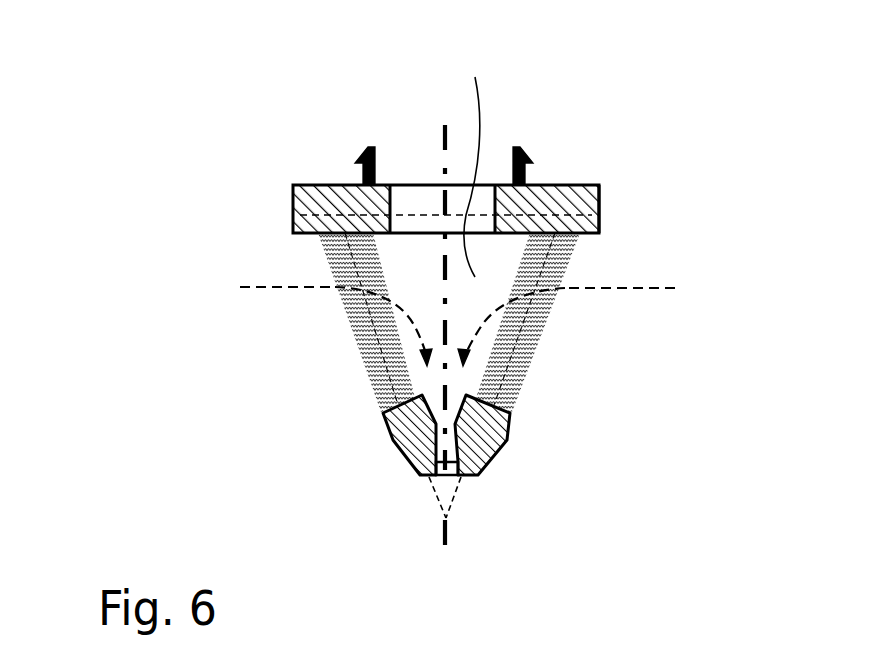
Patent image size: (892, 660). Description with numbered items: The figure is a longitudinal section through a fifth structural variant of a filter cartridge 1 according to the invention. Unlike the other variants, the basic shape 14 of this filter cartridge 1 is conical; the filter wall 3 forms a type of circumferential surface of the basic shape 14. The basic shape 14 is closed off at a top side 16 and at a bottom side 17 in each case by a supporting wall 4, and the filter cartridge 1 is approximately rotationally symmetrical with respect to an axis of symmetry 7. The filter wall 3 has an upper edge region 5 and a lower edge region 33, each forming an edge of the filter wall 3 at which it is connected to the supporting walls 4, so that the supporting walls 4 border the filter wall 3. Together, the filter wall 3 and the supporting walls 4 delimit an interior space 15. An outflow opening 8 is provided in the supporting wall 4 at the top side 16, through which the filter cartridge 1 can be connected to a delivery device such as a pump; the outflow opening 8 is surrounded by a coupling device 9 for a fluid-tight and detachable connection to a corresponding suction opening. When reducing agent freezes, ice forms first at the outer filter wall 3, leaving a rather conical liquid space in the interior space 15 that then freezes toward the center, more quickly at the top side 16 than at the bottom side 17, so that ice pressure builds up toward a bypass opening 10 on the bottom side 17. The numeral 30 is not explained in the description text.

The filter cartridge 1 is at (273, 165).
The filter wall 3 is at (573, 249).
The supporting wall 4 is at (555, 185).
The upper edge region 5 is at (318, 237).
The axis of symmetry 7 is at (445, 126).
The outflow opening 8 is at (423, 186).
The coupling device 9 is at (362, 172).
The bypass opening 10 is at (437, 483).
The basic shape 14 is at (367, 345).
The interior space 15 is at (477, 157).
The top side 16 is at (599, 190).
The bottom side 17 is at (462, 490).
The deflection plane 30 is at (262, 289).
The lower edge region 33 is at (383, 410).